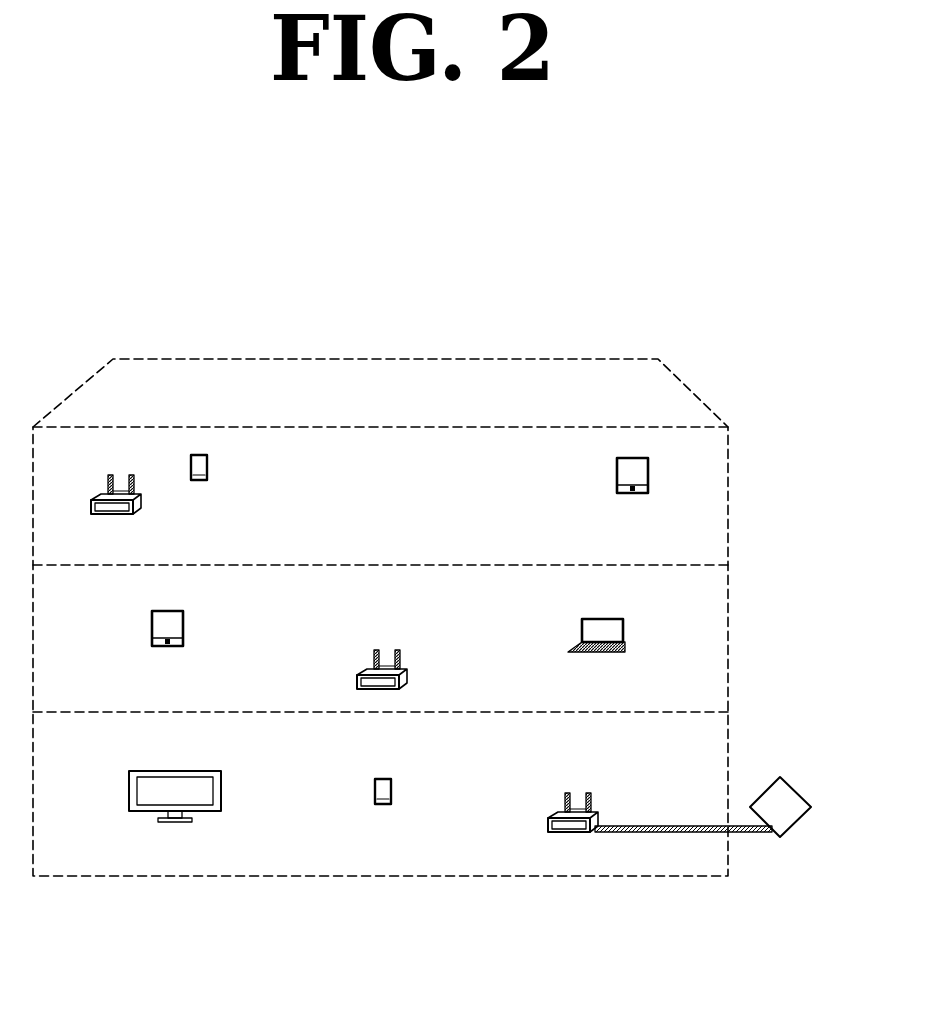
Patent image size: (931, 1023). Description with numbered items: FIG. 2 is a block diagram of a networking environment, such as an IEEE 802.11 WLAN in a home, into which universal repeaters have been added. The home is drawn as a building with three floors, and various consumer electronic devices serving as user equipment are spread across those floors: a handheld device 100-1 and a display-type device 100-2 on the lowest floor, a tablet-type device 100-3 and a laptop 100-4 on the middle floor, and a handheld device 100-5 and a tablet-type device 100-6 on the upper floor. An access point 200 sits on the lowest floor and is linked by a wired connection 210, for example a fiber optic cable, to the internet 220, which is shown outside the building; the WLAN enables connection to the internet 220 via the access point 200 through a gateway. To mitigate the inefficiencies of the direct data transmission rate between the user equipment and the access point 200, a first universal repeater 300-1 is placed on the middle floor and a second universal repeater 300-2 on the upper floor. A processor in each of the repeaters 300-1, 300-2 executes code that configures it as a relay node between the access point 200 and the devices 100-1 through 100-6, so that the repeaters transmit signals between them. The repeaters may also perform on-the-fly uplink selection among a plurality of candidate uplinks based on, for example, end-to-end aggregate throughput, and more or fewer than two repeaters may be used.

The user equipment 100-1 is at (374, 782).
The user equipment 100-2 is at (131, 770).
The user equipment 100-3 is at (152, 612).
The user equipment 100-4 is at (580, 622).
The user equipment 100-5 is at (208, 466).
The user equipment 100-6 is at (614, 476).
The access point 200 is at (602, 821).
The connection 210 is at (683, 824).
The internet 220 is at (790, 778).
The first universal repeater 300-1 is at (410, 673).
The second universal repeater 300-2 is at (118, 517).